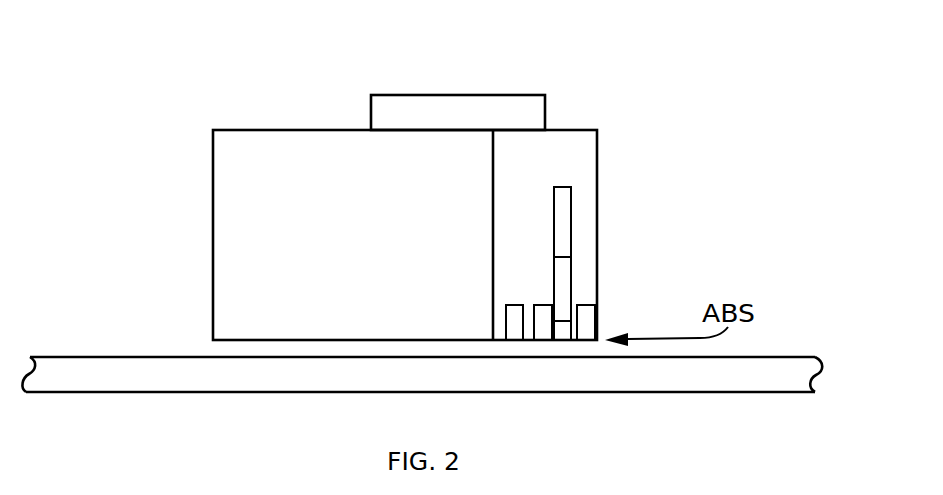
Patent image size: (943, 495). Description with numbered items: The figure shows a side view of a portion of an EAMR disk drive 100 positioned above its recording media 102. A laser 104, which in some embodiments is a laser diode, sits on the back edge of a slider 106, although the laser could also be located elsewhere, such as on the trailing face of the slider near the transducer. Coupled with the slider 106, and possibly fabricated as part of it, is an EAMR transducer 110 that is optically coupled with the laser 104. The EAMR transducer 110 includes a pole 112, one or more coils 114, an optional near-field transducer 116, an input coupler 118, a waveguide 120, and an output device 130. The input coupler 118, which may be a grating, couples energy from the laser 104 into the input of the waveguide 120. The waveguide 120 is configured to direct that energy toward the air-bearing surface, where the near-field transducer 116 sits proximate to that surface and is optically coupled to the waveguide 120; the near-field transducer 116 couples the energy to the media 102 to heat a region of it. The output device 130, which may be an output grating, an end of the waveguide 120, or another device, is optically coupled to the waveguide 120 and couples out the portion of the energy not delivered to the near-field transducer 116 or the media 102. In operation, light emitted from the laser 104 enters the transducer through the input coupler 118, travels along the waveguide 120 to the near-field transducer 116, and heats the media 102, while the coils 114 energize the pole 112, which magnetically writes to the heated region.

The EAMR disk drive 100 is at (445, 36).
The media 102 is at (817, 390).
The laser 104 is at (371, 105).
The slider 106 is at (212, 322).
The EAMR transducer 110 is at (683, 272).
The pole 112 is at (500, 320).
The coils 114 is at (598, 313).
The near-field transducer 116 is at (559, 340).
The input coupler 118 is at (562, 187).
The waveguide 120 is at (573, 262).
The output device 130 is at (543, 340).